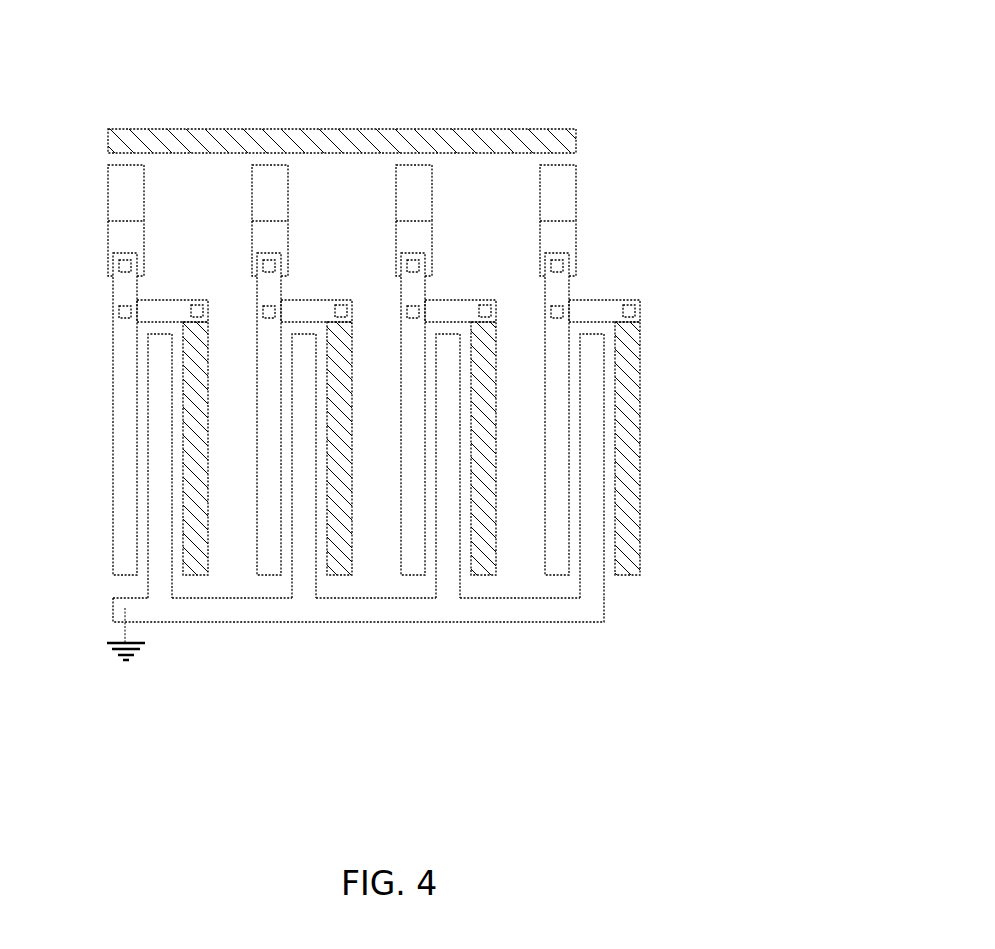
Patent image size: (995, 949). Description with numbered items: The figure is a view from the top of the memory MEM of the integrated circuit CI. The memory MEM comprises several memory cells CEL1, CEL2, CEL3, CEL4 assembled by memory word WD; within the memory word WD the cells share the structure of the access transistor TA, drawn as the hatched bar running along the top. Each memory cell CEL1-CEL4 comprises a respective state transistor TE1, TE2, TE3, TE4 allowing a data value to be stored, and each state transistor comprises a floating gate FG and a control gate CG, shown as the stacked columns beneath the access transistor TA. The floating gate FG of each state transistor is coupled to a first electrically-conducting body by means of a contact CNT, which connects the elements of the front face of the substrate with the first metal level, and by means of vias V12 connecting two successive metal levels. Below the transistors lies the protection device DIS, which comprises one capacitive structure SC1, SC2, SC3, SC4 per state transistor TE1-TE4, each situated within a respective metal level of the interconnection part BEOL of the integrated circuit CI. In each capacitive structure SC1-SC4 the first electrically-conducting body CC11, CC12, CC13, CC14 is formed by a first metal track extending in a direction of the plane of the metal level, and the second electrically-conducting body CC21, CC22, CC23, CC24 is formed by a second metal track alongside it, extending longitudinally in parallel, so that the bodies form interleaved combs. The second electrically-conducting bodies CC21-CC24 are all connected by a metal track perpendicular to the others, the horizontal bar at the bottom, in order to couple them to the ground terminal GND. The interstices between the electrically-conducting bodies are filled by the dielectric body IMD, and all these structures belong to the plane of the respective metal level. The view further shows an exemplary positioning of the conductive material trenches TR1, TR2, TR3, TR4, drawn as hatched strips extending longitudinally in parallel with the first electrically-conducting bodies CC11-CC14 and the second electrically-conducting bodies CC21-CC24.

The memory cell CEL1 is at (125, 171).
The memory cell CEL2 is at (291, 171).
The memory cell CEL3 is at (435, 171).
The memory cell CEL4 is at (579, 171).
The integrated circuit CI is at (412, 349).
The memory MEM is at (353, 171).
The access transistor TA is at (108, 131).
The control gate CG is at (114, 190).
The floating gate FG is at (114, 239).
The state transistor TE1 is at (125, 220).
The state transistor TE2 is at (291, 222).
The state transistor TE3 is at (435, 222).
The state transistor TE4 is at (579, 222).
The contact CNT is at (118, 266).
The via V12 is at (118, 312).
The dielectric body IMD is at (143, 337).
The memory word WD is at (378, 458).
The first electrically-conducting body CC11 is at (117, 414).
The first electrically-conducting body CC12 is at (270, 515).
The first electrically-conducting body CC13 is at (414, 515).
The first electrically-conducting body CC14 is at (558, 515).
The second electrically-conducting body CC21 is at (158, 519).
The second electrically-conducting body CC22 is at (307, 547).
The second electrically-conducting body CC23 is at (451, 547).
The second electrically-conducting body CC24 is at (595, 547).
The capacitive structure SC1 is at (110, 425).
The capacitive structure SC2 is at (282, 460).
The capacitive structure SC3 is at (426, 460).
The capacitive structure SC4 is at (569, 460).
The conductive material trench TR1 is at (200, 460).
The conductive material trench TR2 is at (344, 460).
The conductive material trench TR3 is at (488, 460).
The conductive material trench TR4 is at (632, 460).
The ground terminal GND is at (107, 646).
The protection device DIS is at (450, 458).
The interconnection part BEOL is at (412, 462).